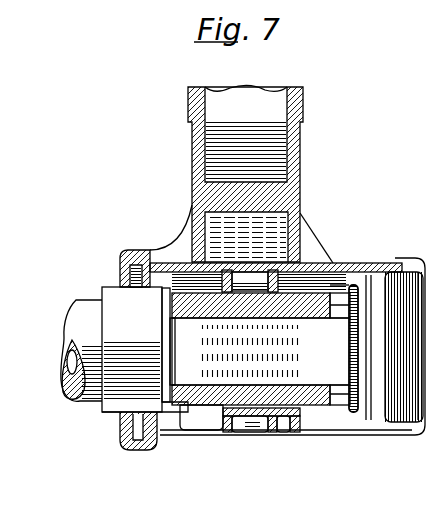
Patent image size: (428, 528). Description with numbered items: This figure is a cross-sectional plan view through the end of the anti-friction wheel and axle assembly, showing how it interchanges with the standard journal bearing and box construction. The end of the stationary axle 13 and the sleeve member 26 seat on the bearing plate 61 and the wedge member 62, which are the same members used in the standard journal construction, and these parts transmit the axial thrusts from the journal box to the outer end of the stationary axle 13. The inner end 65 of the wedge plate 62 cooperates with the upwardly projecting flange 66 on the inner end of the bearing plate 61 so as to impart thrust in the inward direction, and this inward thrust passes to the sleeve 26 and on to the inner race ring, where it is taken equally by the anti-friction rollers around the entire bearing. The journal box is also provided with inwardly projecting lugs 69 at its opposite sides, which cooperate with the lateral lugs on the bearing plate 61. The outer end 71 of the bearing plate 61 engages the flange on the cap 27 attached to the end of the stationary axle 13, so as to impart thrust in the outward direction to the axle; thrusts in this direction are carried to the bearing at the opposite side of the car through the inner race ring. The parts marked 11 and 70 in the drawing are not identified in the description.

The casing 11 is at (372, 263).
The stationary axle 13 is at (74, 404).
The sleeve member 26 is at (120, 416).
The cap 27 is at (360, 340).
The bearing plate 61 is at (261, 351).
The wedge member 62 is at (252, 310).
The inner end of the wedge plate 65 is at (163, 300).
The upwardly projecting flange 66 is at (175, 338).
The inwardly projecting lugs 69 is at (252, 432).
The gusset 70 is at (305, 262).
The outer end of the bearing plate 71 is at (358, 312).